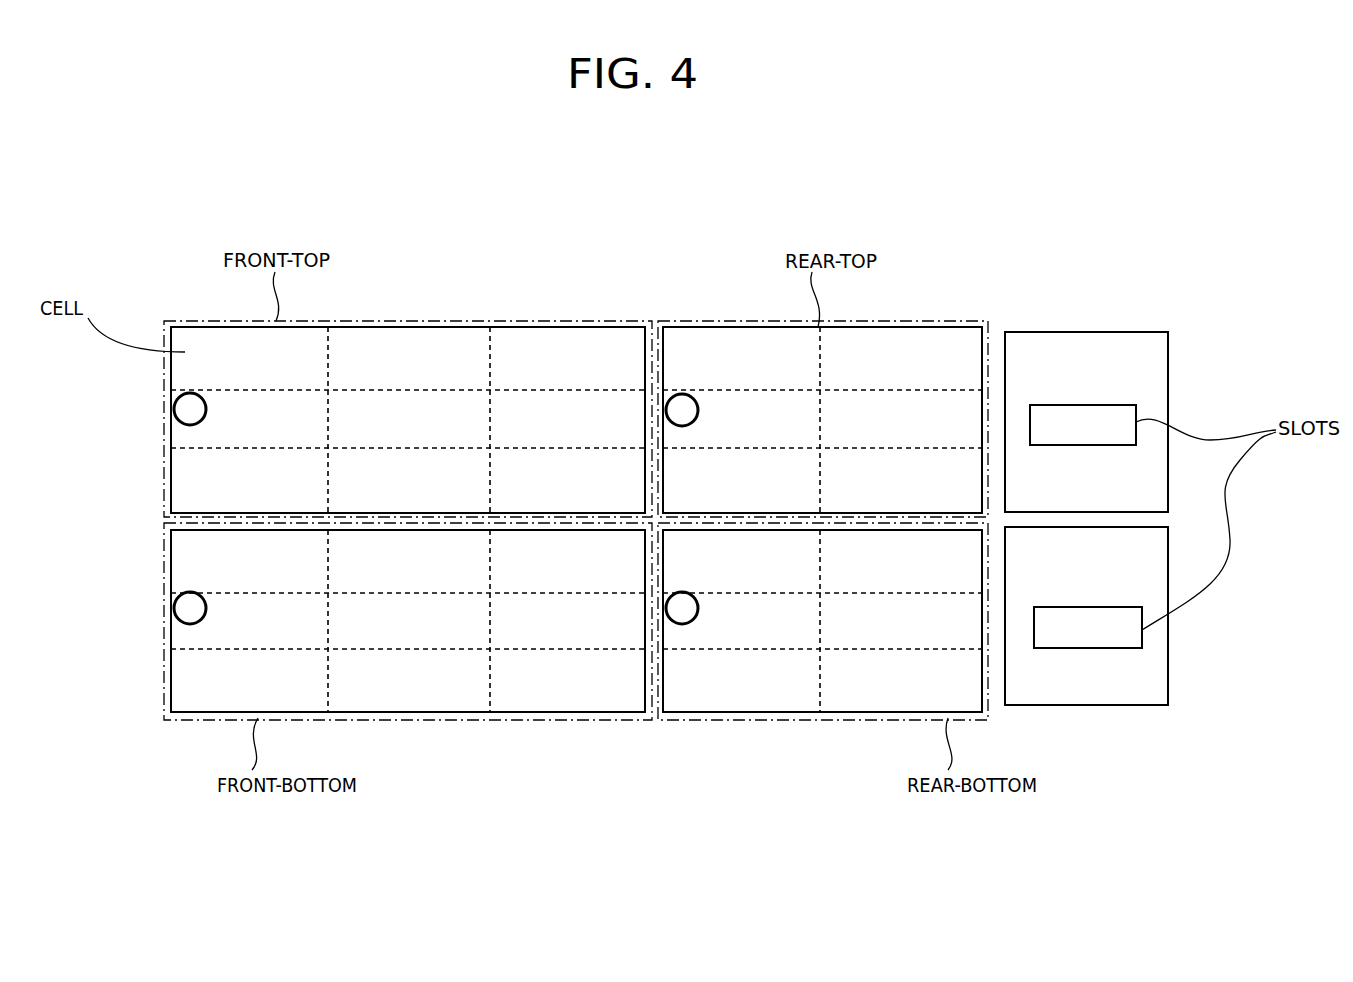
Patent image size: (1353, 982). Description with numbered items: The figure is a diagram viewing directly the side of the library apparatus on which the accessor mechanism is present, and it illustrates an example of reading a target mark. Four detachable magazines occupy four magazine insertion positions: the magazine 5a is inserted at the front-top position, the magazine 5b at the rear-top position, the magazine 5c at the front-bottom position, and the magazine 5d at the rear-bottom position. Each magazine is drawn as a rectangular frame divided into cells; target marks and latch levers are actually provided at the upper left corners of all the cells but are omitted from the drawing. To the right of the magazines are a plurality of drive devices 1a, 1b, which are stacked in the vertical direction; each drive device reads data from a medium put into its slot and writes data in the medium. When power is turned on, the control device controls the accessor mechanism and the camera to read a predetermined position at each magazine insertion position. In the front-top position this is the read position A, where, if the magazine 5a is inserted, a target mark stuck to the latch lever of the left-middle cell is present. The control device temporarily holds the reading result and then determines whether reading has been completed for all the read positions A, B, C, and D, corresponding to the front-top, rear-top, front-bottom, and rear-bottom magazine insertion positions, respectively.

The magazine 5a is at (425, 327).
The magazine 5b is at (918, 327).
The magazine 5c is at (418, 716).
The magazine 5d is at (808, 715).
The drive device 1a is at (1082, 332).
The drive device 1b is at (1088, 708).
The read position A is at (175, 408).
The read position B is at (682, 395).
The read position C is at (175, 604).
The read position D is at (672, 622).